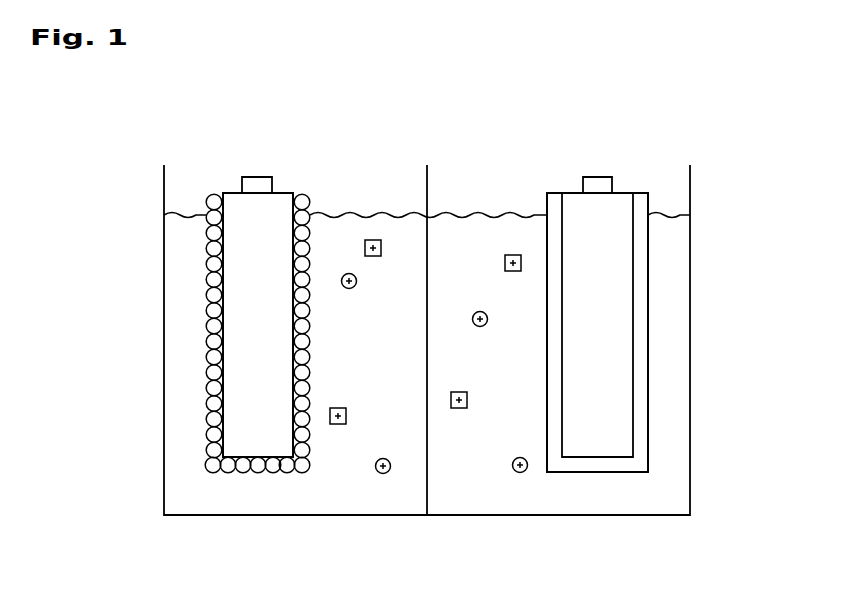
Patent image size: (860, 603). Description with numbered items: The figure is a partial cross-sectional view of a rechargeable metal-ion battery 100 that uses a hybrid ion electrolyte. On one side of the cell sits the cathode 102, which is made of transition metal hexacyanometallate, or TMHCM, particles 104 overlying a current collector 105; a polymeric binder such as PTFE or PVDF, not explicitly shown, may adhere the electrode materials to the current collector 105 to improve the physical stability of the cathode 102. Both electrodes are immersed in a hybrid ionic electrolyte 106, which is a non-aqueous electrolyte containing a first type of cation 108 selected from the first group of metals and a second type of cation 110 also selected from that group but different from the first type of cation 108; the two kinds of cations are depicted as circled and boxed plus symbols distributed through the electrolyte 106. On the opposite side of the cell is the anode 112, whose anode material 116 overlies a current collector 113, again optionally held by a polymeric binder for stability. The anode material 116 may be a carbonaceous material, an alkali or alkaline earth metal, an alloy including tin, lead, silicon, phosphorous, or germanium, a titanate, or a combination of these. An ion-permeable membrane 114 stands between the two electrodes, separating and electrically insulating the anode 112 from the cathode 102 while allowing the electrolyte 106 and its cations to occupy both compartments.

The battery 100 is at (640, 46).
The cathode 102 is at (290, 124).
The transition metal hexacyanometallate (TMHCM) particles 104 is at (207, 363).
The current collector 105 is at (278, 329).
The hybrid ionic electrolyte 106 is at (658, 506).
The first type of cation 108 is at (473, 319).
The second type of cation 110 is at (346, 416).
The anode 112 is at (611, 128).
The current collector 113 is at (616, 327).
The ion-permeable membrane 114 is at (426, 490).
The anode material 116 is at (648, 360).